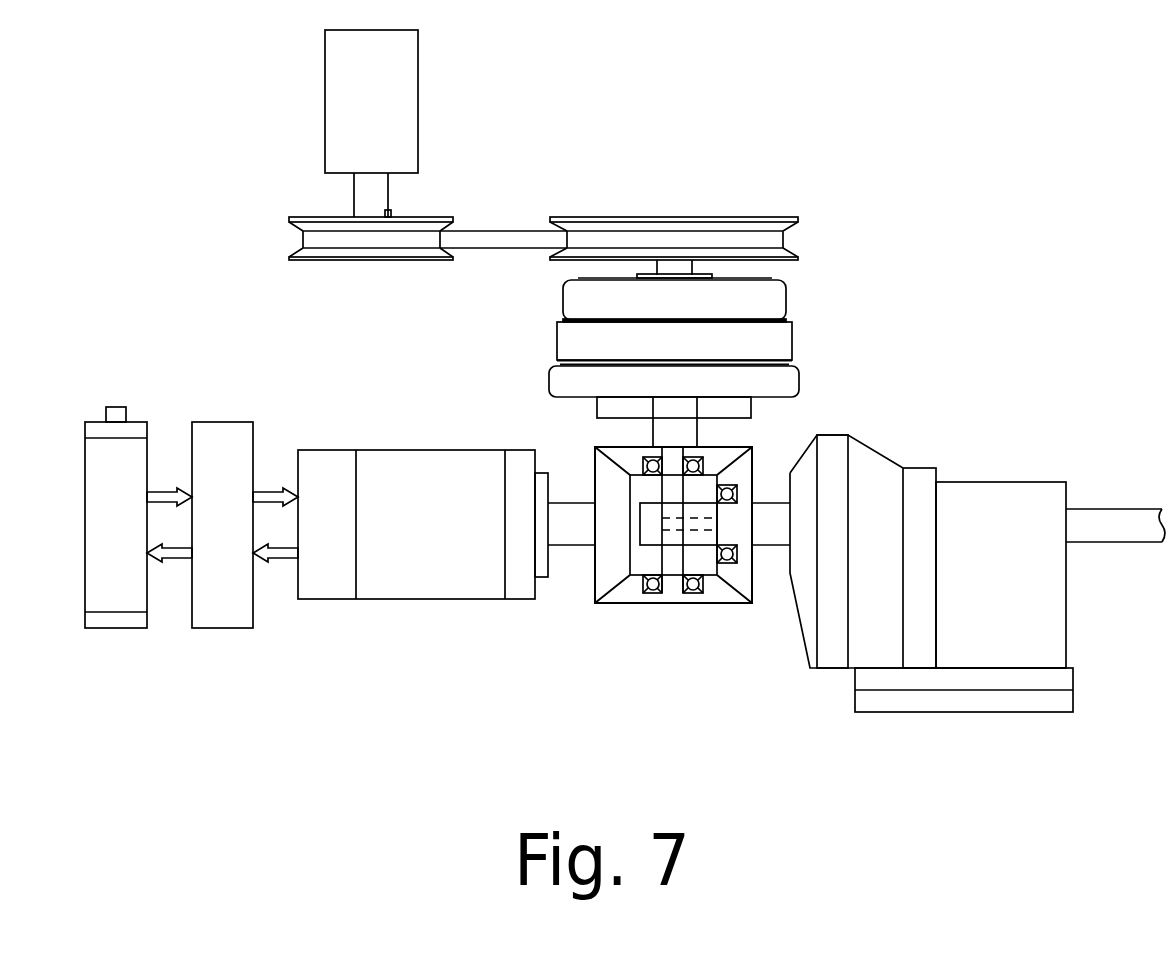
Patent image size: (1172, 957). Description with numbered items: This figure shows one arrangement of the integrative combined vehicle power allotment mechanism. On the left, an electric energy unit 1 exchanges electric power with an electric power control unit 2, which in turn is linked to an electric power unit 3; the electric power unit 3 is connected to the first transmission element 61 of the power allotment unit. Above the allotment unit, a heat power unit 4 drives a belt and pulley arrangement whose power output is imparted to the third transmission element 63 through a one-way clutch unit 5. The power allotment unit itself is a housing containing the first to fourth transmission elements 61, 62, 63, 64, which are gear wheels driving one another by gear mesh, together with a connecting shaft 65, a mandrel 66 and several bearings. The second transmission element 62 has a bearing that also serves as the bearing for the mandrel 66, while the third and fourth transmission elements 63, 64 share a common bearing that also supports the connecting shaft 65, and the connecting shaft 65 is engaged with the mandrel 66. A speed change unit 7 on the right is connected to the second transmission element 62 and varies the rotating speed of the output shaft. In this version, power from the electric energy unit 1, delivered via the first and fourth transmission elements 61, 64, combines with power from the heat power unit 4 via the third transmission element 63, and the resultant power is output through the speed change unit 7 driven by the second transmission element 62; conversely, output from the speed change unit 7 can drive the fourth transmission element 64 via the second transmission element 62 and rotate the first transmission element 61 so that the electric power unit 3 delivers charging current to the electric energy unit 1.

The electric energy unit 1 is at (122, 597).
The electric power control unit 2 is at (222, 575).
The electric power unit 3 is at (425, 562).
The heat power unit 4 is at (355, 103).
The one-way clutch unit 5 is at (577, 344).
The speed change unit 7 is at (987, 518).
The first transmission element 61 is at (612, 555).
The second transmission element 62 is at (743, 573).
The third transmission element 63 is at (723, 455).
The fourth transmission element 64 is at (635, 593).
The connecting shaft 65 is at (673, 563).
The mandrel 66 is at (700, 535).